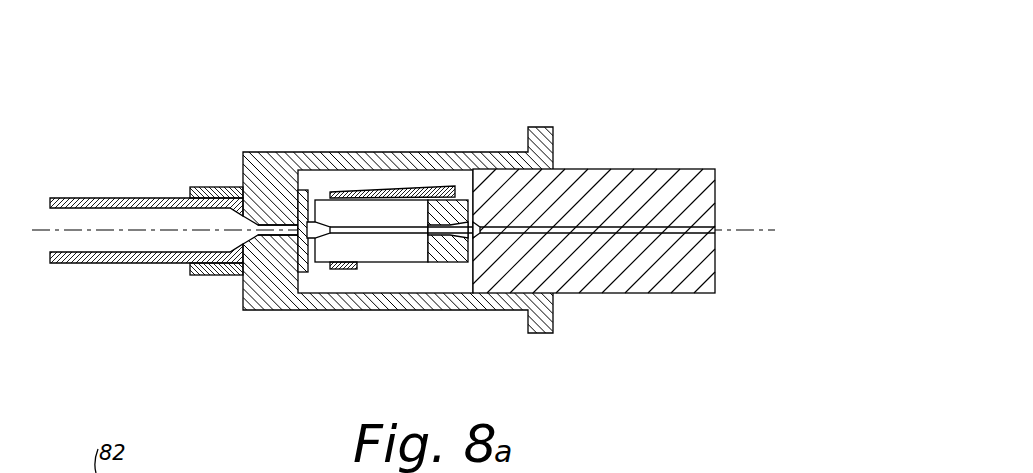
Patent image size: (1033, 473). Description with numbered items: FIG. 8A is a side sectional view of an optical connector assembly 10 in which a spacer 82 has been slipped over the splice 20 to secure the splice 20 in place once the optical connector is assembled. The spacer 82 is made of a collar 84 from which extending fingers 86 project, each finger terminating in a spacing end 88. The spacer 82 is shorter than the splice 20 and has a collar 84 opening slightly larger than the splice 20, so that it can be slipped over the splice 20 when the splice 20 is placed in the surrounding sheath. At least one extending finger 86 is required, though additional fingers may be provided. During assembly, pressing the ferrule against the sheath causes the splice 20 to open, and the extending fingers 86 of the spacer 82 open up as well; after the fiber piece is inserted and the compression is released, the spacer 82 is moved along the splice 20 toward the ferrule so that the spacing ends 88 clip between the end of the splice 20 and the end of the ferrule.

The fiber optic connector assembly 10 is at (625, 110).
The splice 20 is at (407, 247).
The spacer 82 is at (352, 178).
The collar 84 is at (343, 268).
The extending fingers 86 is at (420, 190).
The spacing ends 88 is at (462, 197).